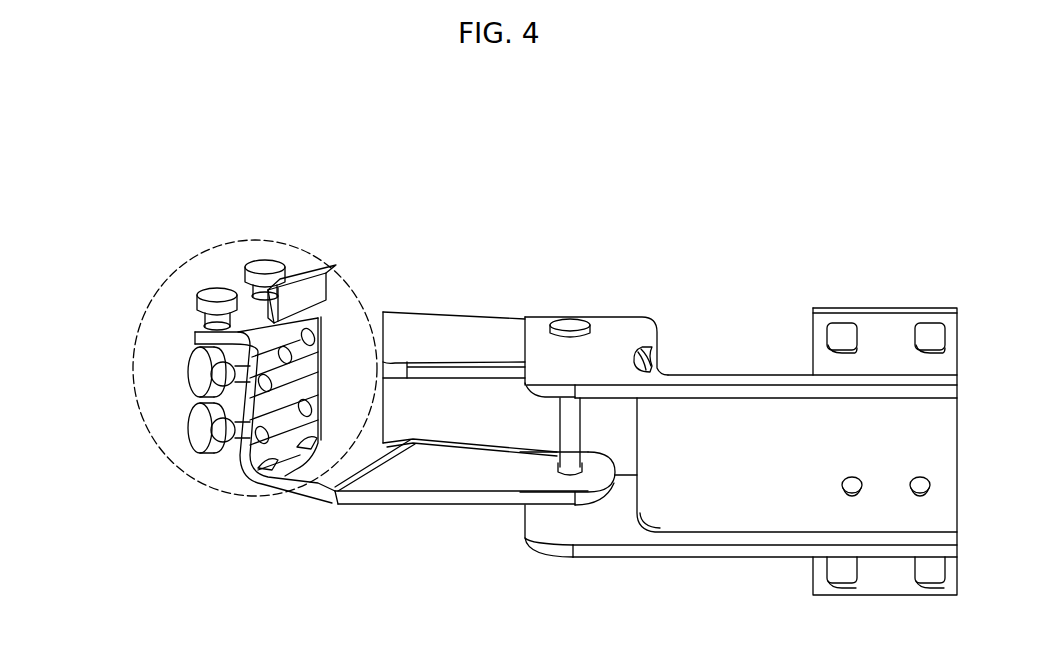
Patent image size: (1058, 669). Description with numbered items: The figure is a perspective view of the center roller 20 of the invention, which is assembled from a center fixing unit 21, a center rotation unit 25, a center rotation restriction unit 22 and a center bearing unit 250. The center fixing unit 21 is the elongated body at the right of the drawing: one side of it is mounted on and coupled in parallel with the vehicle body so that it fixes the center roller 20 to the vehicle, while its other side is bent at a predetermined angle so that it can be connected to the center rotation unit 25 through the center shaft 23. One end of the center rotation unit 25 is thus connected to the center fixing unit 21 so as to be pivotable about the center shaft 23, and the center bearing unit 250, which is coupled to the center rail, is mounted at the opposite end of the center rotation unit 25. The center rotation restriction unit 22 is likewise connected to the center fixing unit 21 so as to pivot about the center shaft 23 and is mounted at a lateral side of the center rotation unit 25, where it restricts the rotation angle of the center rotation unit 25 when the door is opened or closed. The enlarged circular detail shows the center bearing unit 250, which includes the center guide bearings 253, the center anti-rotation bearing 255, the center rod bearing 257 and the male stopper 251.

The center roller 20 is at (780, 228).
The center fixing unit 21 is at (732, 500).
The center rotation restriction unit 22 is at (443, 327).
The center shaft 23 is at (567, 423).
The center rotation unit 25 is at (437, 480).
The center bearing unit 250 is at (207, 478).
The male stopper 251 is at (302, 272).
The center guide bearings 253 is at (255, 262).
The center anti-rotation bearing 255 is at (197, 375).
The center rod bearing 257 is at (197, 437).